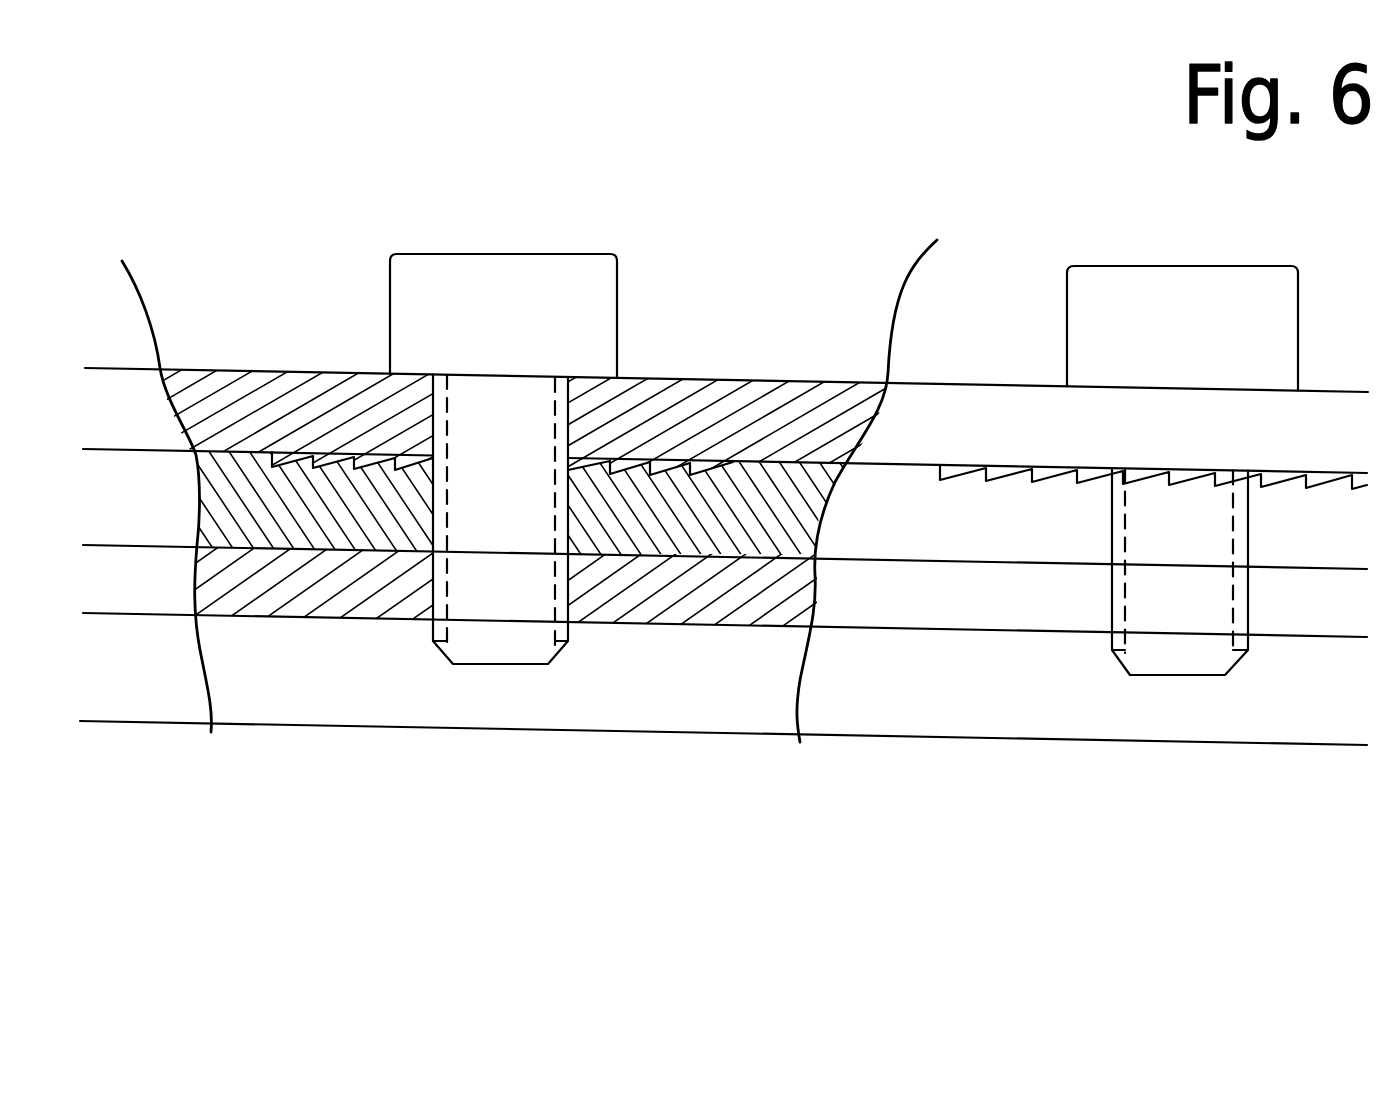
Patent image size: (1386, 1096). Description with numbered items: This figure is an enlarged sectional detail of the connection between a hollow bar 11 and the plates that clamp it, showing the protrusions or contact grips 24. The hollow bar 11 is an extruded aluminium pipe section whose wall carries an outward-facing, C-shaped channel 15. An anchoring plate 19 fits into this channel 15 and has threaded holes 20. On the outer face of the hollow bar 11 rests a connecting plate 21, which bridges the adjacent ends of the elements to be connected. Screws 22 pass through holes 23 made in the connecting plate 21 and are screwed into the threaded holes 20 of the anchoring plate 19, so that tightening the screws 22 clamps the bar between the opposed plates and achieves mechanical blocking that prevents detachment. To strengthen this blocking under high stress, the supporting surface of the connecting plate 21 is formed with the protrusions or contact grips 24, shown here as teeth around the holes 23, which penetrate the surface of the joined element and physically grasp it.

The hollow bar 11 is at (713, 767).
The channel 15 is at (507, 708).
The anchoring plate 19 is at (382, 587).
The threaded hole 20 is at (570, 588).
The connecting plate 21 is at (795, 422).
The screw 22 is at (487, 317).
The hole 23 is at (570, 433).
The protrusions or contact grips 24 is at (330, 465).